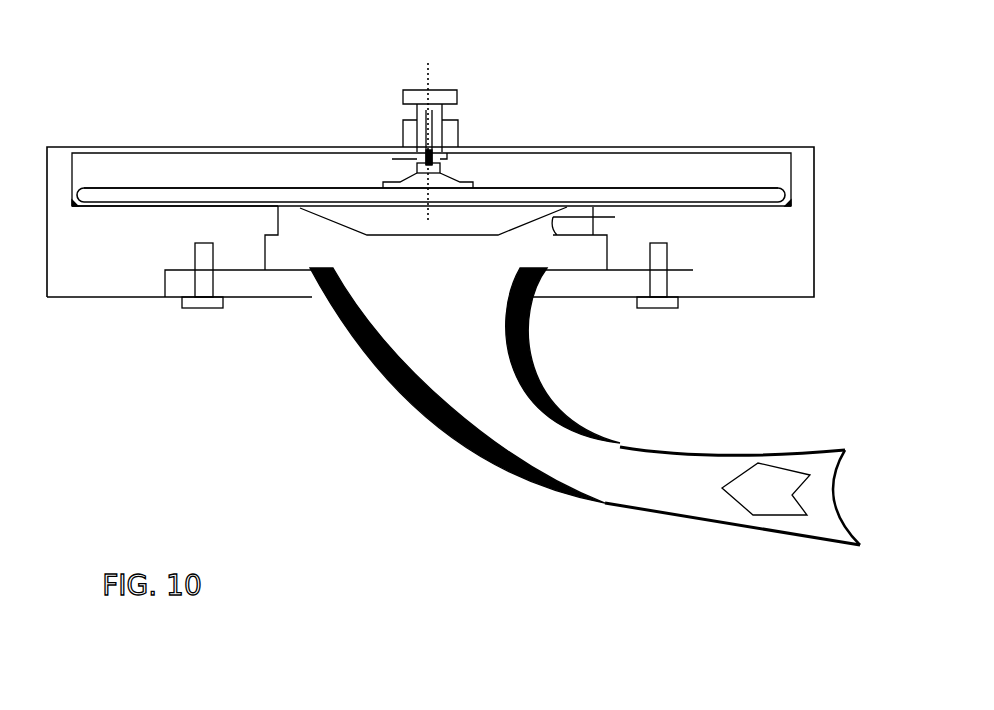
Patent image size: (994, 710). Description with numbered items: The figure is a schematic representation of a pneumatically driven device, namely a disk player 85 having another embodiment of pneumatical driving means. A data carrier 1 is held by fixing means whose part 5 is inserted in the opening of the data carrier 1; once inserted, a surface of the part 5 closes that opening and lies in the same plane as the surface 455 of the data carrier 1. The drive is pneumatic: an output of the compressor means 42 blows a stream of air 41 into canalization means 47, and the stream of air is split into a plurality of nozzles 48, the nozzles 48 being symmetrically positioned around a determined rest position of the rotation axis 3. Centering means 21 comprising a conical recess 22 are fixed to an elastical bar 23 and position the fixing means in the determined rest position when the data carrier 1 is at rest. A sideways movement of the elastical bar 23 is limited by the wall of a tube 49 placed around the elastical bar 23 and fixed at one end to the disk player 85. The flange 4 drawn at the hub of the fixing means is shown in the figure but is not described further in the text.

The data carrier 1 is at (708, 193).
The rotation axis 3 is at (423, 73).
The hub flange 4 is at (381, 182).
The part of the fixing means 5 is at (452, 195).
The centering means 21 is at (433, 168).
The conical recess 22 is at (428, 174).
The elastical bar 23 is at (392, 159).
The stream of air 41 is at (777, 497).
The compressor means 42 is at (783, 452).
The canalization means 47 is at (529, 367).
The nozzles 48 is at (615, 217).
The tube 49 is at (418, 125).
The disk player 85 is at (447, 96).
The surface of the data carrier 455 is at (145, 202).